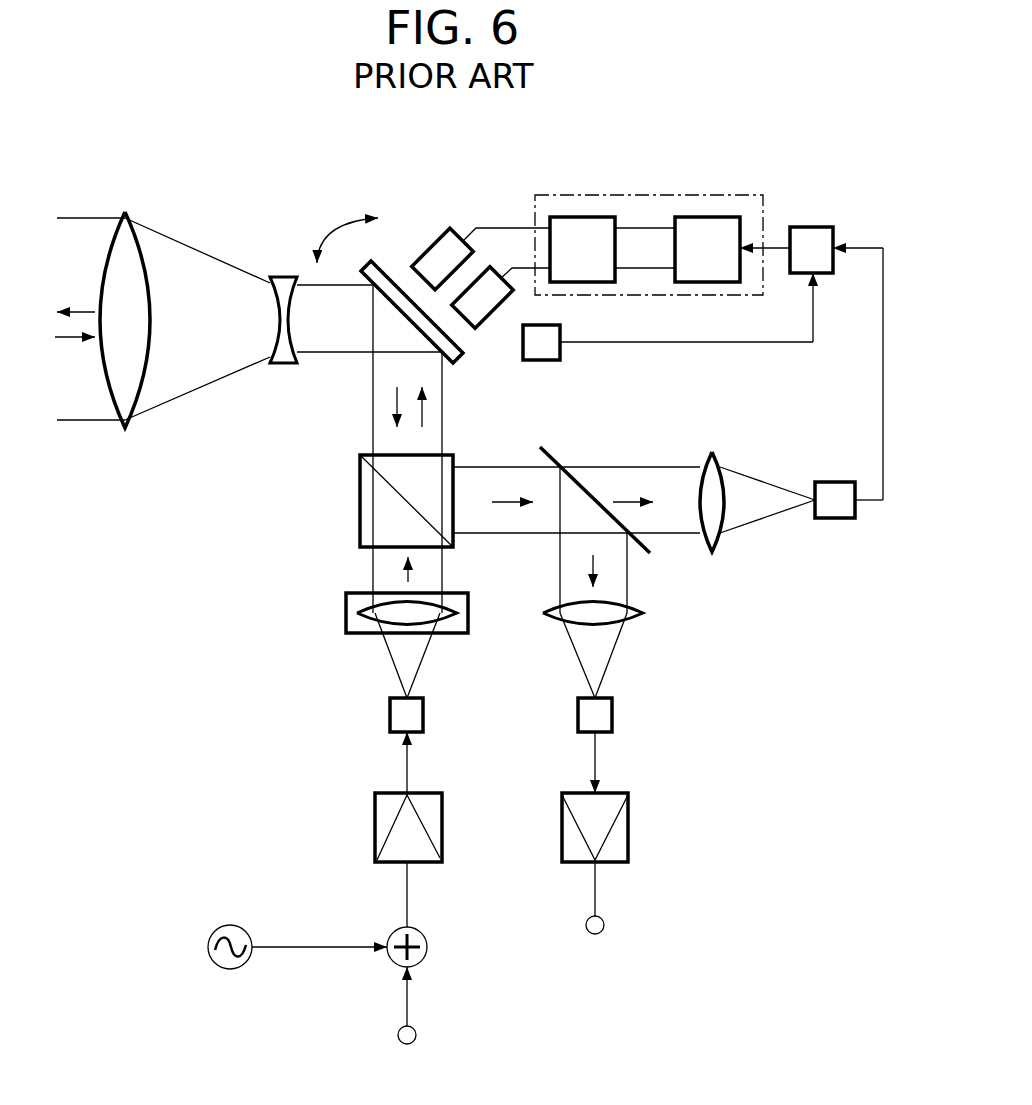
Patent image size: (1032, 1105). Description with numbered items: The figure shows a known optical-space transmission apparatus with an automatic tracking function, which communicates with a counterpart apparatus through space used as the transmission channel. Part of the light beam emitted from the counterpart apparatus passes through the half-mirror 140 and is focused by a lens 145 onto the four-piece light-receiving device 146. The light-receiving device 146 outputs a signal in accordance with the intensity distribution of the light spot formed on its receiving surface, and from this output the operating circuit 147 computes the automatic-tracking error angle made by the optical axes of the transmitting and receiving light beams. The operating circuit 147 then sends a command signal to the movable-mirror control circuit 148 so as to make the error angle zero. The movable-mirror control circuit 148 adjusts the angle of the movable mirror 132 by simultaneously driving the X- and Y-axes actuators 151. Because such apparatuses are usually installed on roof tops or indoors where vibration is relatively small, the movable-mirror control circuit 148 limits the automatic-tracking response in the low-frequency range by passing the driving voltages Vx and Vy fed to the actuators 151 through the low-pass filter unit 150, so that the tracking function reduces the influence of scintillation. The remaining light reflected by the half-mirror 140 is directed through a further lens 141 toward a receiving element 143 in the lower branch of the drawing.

The movable mirror 132 is at (388, 283).
The X- and Y-axes actuators 151 is at (433, 253).
The low-pass filter unit 150 is at (585, 223).
The movable-mirror control circuit 148 is at (652, 222).
The operating circuit 147 is at (813, 227).
The half-mirror 140 is at (551, 455).
The condenser lens 145 is at (718, 463).
The four-piece light-receiving device 146 is at (837, 482).
The condenser lens 141 is at (645, 615).
The photodetector 143 is at (630, 830).